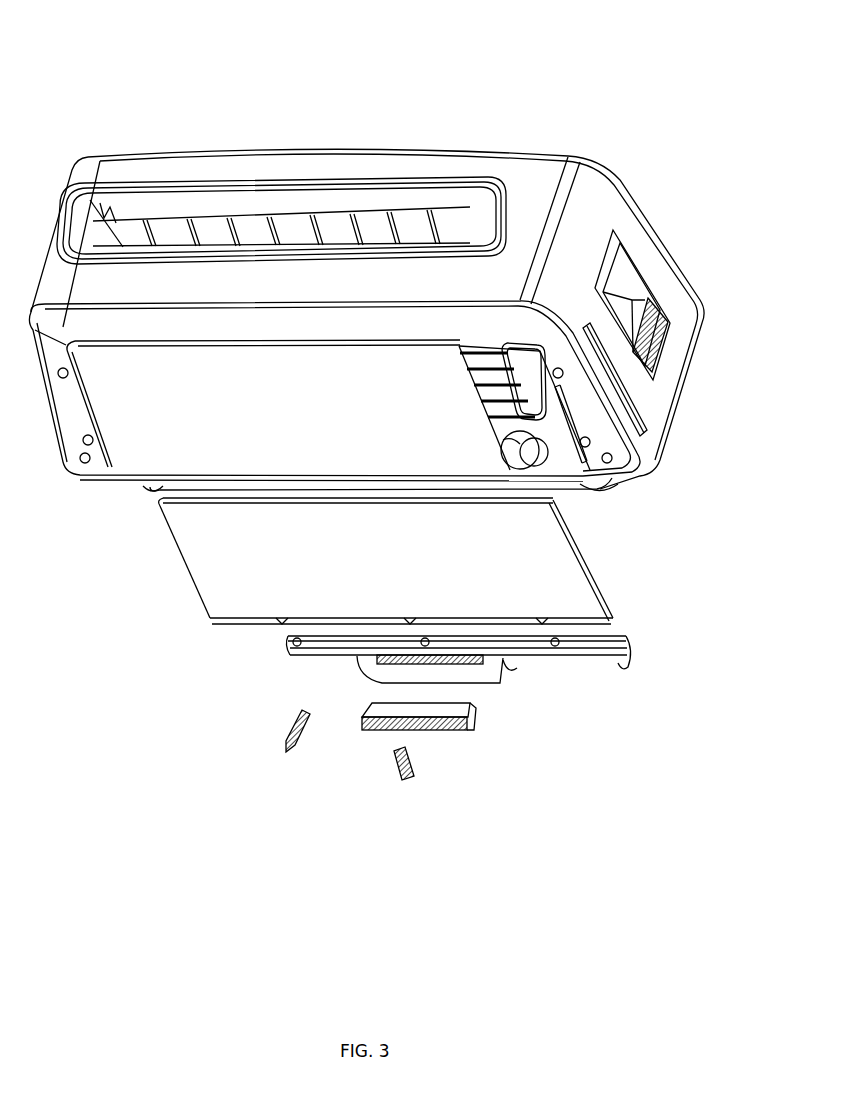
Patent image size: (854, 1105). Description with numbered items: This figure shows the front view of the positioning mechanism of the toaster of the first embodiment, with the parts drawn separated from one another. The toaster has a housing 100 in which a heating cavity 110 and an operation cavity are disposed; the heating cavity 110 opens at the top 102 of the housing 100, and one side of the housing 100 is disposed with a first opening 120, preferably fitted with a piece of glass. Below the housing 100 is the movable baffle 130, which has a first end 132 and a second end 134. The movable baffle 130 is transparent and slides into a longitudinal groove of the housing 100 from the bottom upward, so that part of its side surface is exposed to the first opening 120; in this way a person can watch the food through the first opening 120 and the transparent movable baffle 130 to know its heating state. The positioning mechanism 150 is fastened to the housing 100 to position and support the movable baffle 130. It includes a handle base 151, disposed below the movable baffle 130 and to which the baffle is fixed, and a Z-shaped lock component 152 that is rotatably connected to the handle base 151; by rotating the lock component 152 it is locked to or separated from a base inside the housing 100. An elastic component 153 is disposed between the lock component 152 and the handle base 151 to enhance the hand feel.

The housing 100 is at (580, 185).
The top 102 is at (500, 180).
The heating cavity 110 is at (357, 233).
The first opening 120 is at (175, 400).
The movable baffle 130 is at (466, 603).
The first end 132 is at (555, 505).
The second end 134 is at (583, 593).
The positioning mechanism 150 is at (325, 708).
The handle base 151 is at (497, 673).
The lock component 152 is at (438, 730).
The elastic component 153 is at (400, 771).